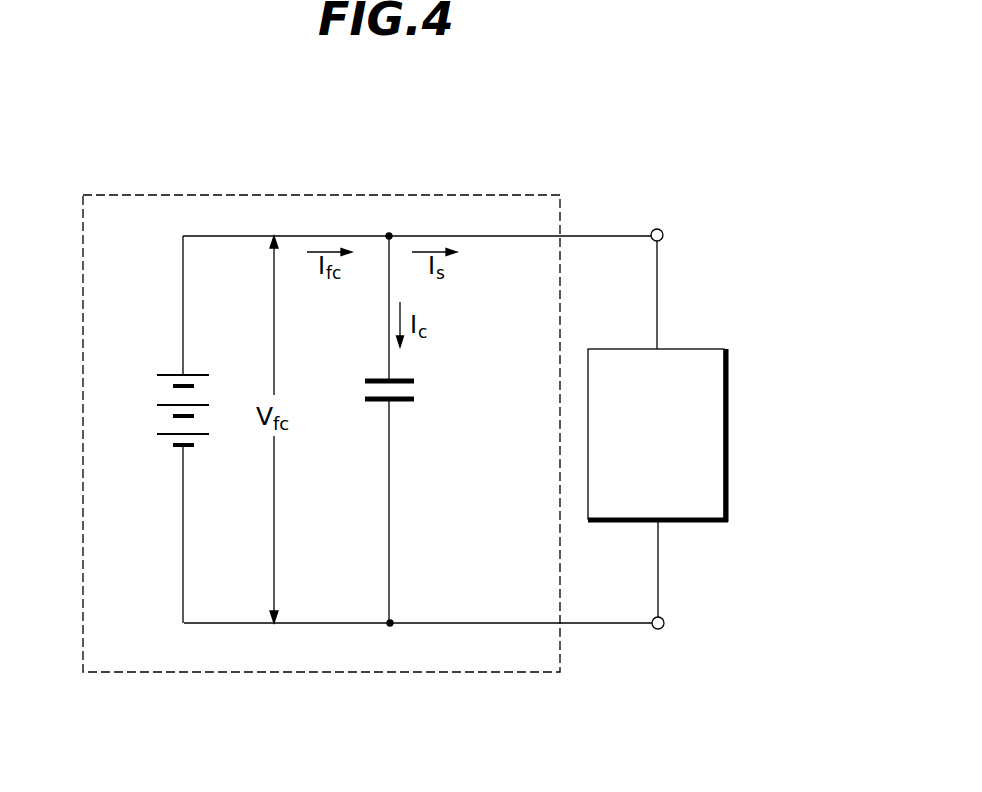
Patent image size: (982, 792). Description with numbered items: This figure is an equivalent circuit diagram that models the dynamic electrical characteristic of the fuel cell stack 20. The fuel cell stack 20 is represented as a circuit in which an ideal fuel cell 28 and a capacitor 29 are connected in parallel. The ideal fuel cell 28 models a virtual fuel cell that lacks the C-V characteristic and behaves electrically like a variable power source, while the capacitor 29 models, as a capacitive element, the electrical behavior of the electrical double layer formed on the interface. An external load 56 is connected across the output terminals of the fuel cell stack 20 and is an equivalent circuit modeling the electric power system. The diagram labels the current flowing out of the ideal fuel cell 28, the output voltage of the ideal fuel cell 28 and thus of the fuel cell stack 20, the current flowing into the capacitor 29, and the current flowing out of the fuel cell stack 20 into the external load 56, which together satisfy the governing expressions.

The fuel cell stack 20 is at (420, 195).
The ideal fuel cell 28 is at (158, 415).
The capacitor 29 is at (398, 402).
The external load 56 is at (730, 380).